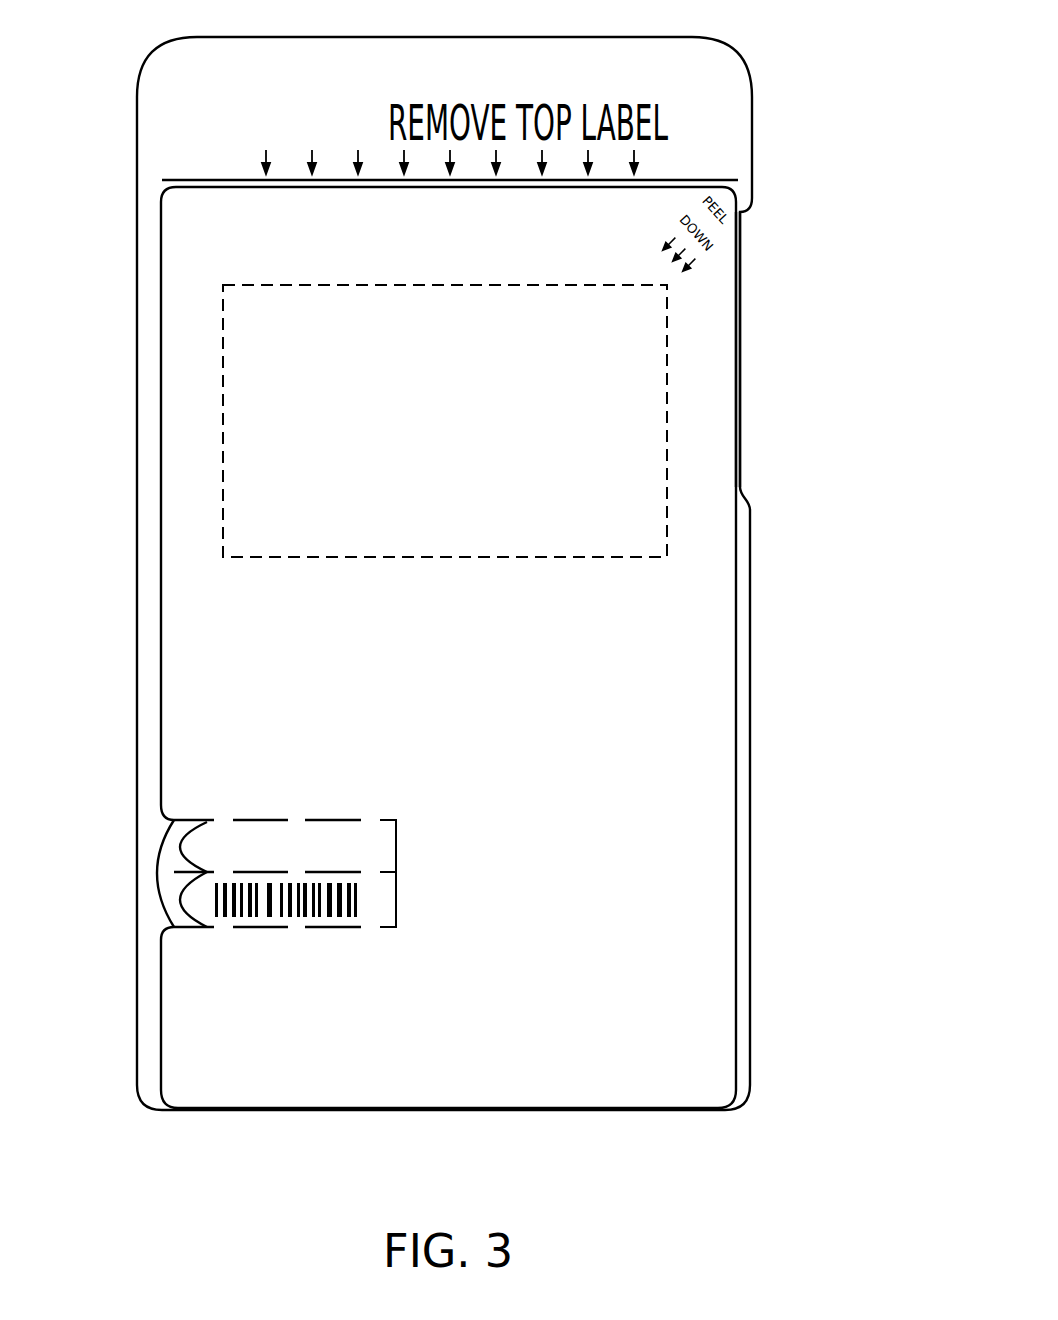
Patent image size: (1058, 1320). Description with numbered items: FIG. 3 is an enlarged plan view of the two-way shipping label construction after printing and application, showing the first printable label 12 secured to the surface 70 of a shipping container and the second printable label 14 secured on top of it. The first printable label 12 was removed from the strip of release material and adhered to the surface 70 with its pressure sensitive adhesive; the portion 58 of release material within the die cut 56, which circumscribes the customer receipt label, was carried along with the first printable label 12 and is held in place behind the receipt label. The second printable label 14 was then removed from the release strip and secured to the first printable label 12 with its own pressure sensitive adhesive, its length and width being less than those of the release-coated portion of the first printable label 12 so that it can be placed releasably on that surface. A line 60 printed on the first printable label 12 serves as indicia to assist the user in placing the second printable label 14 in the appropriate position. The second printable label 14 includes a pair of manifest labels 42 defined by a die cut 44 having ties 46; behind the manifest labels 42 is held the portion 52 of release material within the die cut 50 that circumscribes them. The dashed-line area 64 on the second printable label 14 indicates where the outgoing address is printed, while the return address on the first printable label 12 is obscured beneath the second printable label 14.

The first printable label 12 is at (723, 72).
The second printable label 14 is at (575, 745).
The manifest labels 42 is at (365, 840).
The die cut 44 is at (398, 838).
The ties 46 is at (222, 930).
The die cut 50 is at (160, 884).
The portion of release material 52 is at (170, 845).
The die cut 56 is at (741, 335).
The portion of release material 58 is at (741, 418).
The line 60 is at (180, 180).
The area 64 is at (667, 468).
The surface of a container 70 is at (472, 20).